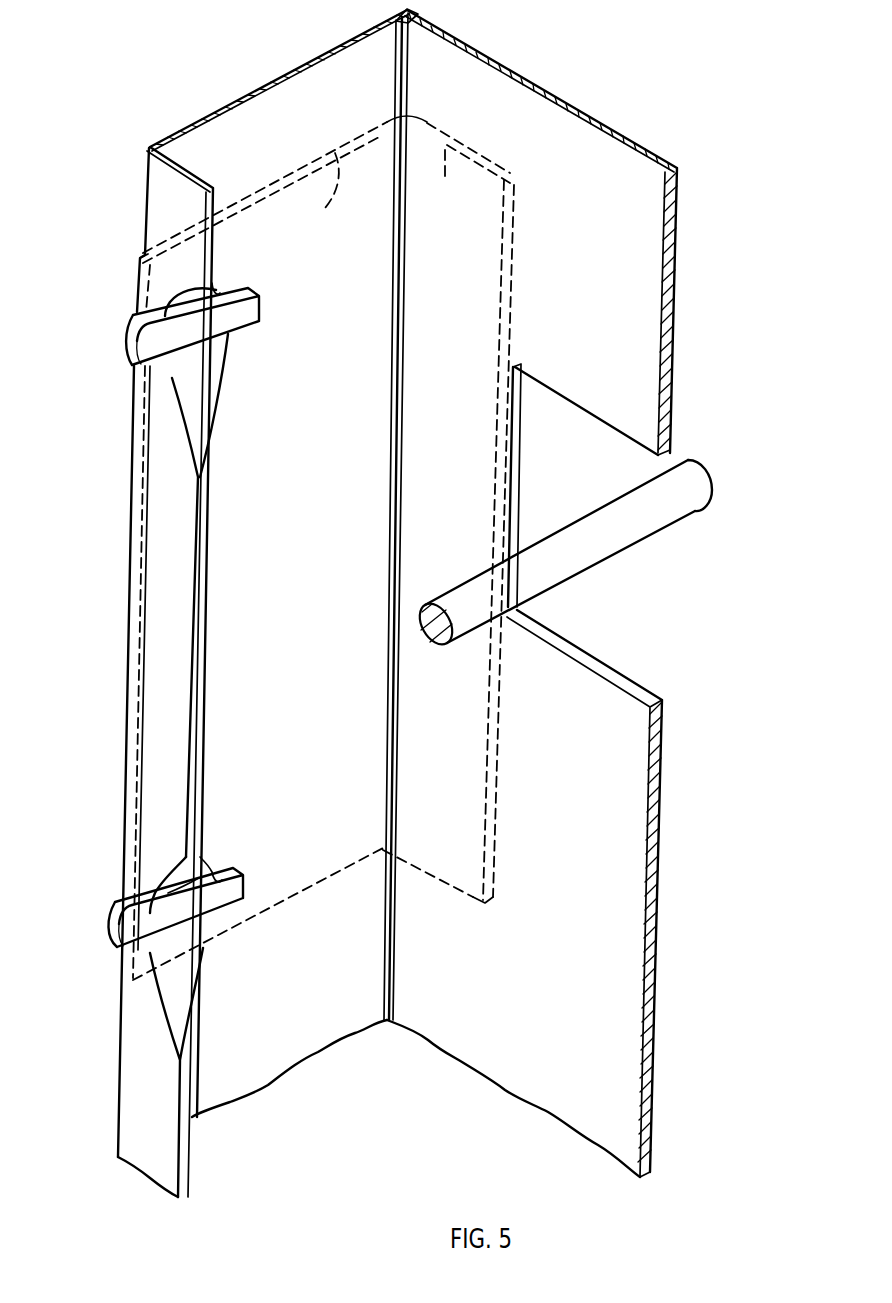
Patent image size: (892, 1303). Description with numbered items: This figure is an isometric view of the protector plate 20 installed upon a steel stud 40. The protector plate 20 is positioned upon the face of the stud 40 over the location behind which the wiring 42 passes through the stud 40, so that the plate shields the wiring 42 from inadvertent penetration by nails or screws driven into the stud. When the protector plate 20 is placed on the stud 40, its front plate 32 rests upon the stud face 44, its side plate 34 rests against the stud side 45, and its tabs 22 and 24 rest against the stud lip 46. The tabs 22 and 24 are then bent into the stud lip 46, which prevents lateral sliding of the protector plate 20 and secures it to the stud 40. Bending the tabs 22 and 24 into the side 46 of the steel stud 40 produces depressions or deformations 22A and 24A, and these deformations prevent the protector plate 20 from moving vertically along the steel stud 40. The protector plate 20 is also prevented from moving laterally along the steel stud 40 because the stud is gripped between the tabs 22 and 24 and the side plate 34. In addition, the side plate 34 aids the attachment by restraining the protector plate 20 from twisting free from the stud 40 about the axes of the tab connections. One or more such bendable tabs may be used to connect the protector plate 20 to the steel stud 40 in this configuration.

The protector plate 20 is at (174, 672).
The tab 22 is at (232, 328).
The depression 22A is at (190, 382).
The tab 24 is at (227, 899).
The depression 24A is at (188, 890).
The front plate 32 is at (335, 153).
The side plate 34 is at (449, 142).
The steel stud 40 is at (440, 599).
The wiring 42 is at (640, 517).
The stud face 44 is at (310, 95).
The stud side 45 is at (592, 253).
The stud lip 46 is at (147, 1083).